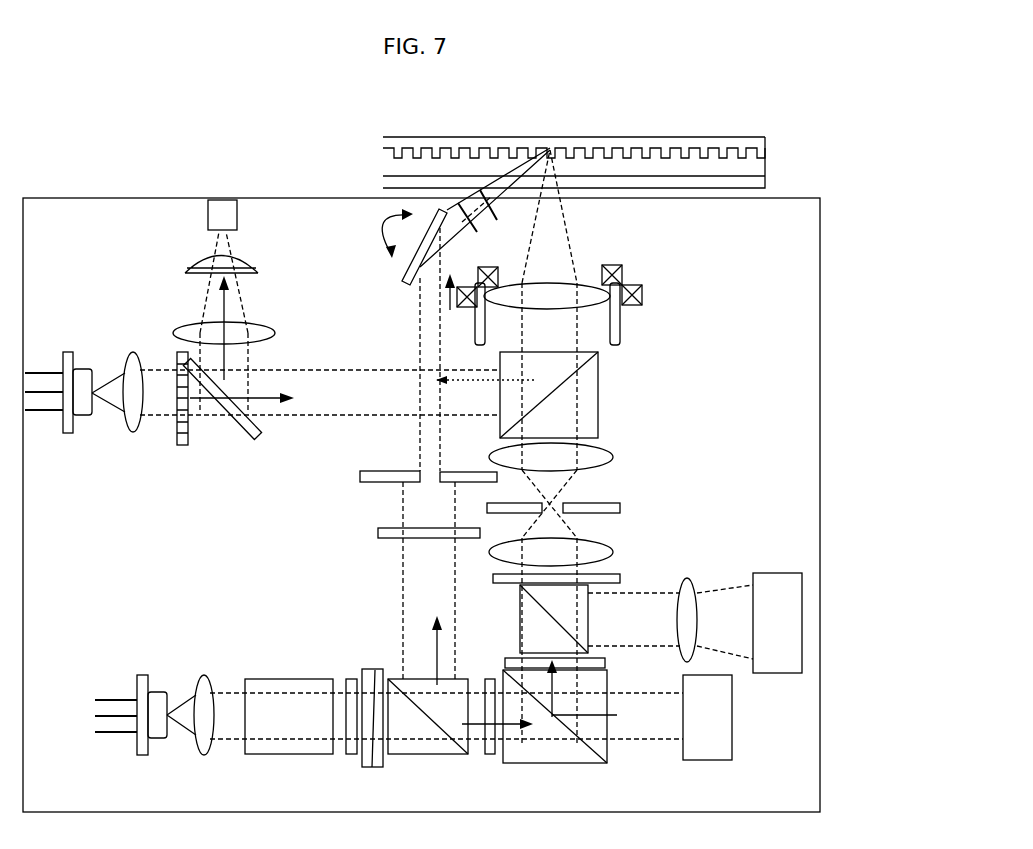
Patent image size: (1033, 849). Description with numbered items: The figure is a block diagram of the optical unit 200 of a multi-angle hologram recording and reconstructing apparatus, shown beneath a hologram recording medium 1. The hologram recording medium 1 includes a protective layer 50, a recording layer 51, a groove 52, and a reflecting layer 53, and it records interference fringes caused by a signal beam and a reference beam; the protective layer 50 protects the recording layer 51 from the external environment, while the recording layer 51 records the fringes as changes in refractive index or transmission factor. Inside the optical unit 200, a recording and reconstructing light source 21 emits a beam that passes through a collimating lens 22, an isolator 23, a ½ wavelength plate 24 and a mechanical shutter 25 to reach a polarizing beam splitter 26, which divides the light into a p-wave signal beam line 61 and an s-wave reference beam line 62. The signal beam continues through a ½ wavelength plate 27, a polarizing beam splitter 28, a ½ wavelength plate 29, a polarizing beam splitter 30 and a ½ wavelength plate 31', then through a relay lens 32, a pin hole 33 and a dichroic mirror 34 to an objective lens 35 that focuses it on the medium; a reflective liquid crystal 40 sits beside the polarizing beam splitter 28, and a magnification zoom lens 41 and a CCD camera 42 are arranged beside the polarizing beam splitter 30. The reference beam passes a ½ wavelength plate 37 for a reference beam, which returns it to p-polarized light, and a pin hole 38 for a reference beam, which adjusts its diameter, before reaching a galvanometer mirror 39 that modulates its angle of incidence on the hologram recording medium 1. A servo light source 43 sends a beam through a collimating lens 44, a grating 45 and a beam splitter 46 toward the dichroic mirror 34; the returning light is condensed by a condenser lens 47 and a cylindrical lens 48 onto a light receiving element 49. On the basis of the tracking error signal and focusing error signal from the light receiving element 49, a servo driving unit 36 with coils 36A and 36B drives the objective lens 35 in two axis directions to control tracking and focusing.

The hologram recording medium 1 is at (614, 156).
The protective layer 50 is at (598, 169).
The recording layer 51 is at (765, 174).
The groove 52 is at (765, 152).
The reflecting layer 53 is at (765, 137).
The optical unit 200 is at (113, 197).
The recording and reconstructing light source 21 is at (147, 674).
The collimating lens 22 is at (205, 674).
The isolator 23 is at (296, 678).
The ½ wavelength plate 24 is at (351, 678).
The mechanical shutter 25 is at (363, 768).
The polarizing beam splitter 26 is at (427, 755).
The ½ wavelength plate 27 is at (488, 755).
The polarizing beam splitter 28 is at (540, 764).
The ½ wavelength plate 29 is at (605, 662).
The polarizing beam splitter 30 is at (588, 622).
The ½ wavelength plate 31' is at (586, 577).
The relay lens 32 is at (630, 551).
The pin hole 33 is at (620, 508).
The dichroic mirror 34 is at (598, 390).
The objective lens 35 is at (548, 310).
The servo driving unit 36 is at (598, 288).
The coil 36A is at (622, 268).
The coil 36B is at (573, 281).
The ½ wavelength plate for a reference beam 37 is at (378, 533).
The pin hole for a reference beam 38 is at (360, 477).
The galvanometer mirror 39 is at (402, 279).
The reflective liquid crystal 40 is at (732, 715).
The magnification zoom lens 41 is at (695, 576).
The CCD camera 42 is at (785, 573).
The servo light source 43 is at (68, 351).
The collimating lens 44 is at (133, 433).
The grating 45 is at (182, 446).
The beam splitter 46 is at (260, 438).
The condenser lens 47 is at (275, 331).
The cylindrical lens 48 is at (256, 264).
The light receiving element 49 is at (237, 216).
The p-wave signal beam line 61 is at (497, 710).
The s-wave reference beam line 62 is at (423, 649).